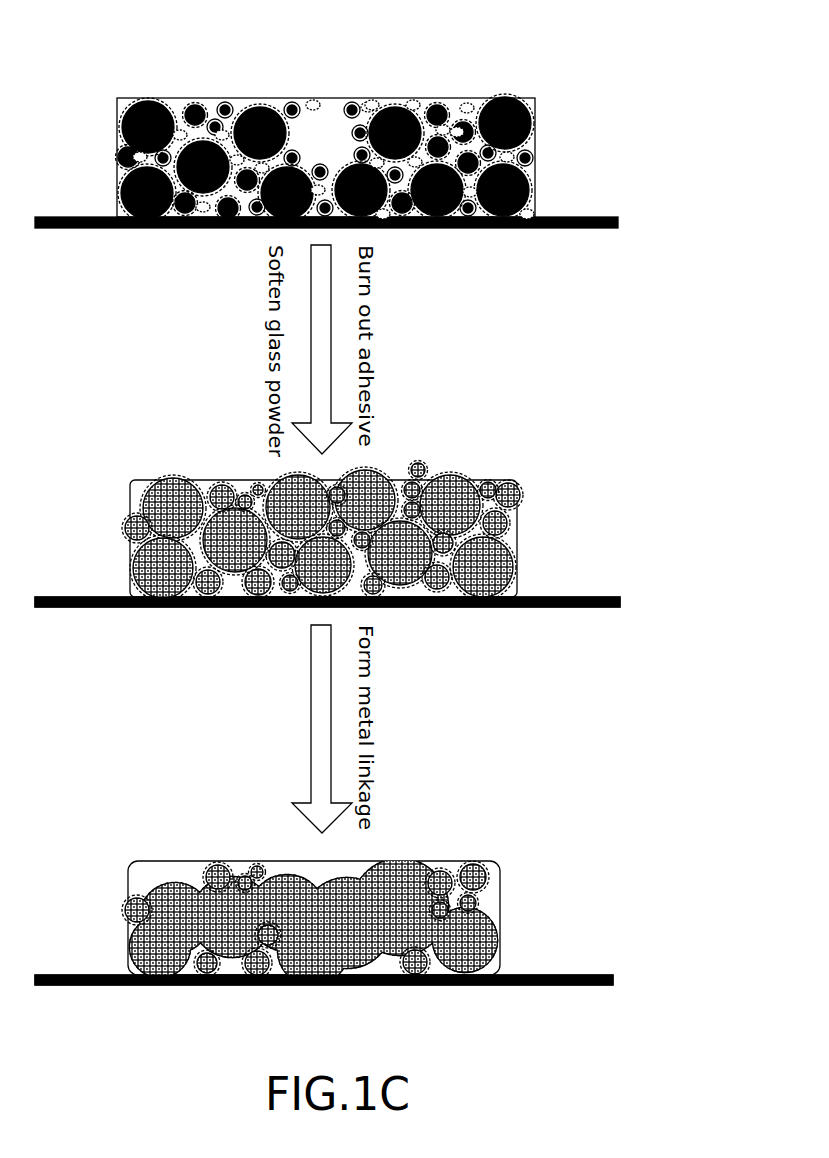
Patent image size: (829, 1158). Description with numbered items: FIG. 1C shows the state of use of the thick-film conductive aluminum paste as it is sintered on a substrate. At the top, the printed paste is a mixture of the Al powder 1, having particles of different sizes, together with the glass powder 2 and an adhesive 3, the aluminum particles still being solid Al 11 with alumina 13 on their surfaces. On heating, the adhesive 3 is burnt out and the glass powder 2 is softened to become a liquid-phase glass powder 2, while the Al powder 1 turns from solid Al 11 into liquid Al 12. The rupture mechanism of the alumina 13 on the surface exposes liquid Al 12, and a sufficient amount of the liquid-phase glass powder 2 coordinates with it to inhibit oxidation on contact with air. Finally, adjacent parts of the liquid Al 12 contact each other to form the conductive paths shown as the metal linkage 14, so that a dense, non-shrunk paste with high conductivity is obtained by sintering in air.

The Al powder 1 is at (263, 98).
The glass powder 2 is at (466, 102).
The adhesive 3 is at (388, 100).
The solid Al 11 is at (141, 100).
The liquid Al 12 is at (178, 487).
The alumina 13 is at (337, 106).
The metal linkage 14 is at (350, 893).